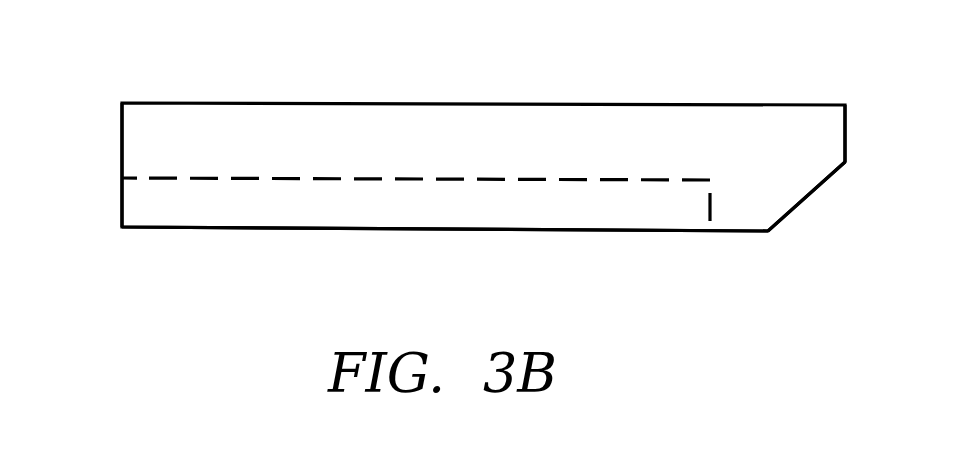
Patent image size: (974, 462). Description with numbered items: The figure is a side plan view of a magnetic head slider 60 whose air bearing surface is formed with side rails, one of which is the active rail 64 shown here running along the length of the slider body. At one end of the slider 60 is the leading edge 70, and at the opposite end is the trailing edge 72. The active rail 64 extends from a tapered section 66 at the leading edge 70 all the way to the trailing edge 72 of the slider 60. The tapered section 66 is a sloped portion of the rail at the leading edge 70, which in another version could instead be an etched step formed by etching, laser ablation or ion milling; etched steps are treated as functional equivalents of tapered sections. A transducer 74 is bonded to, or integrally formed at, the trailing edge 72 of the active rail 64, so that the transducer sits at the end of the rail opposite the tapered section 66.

The magnetic head slider 60 is at (360, 60).
The active rail 64 is at (392, 217).
The tapered section 66 is at (808, 197).
The leading edge 70 is at (845, 132).
The trailing edge 72 is at (122, 125).
The transducer 74 is at (122, 207).